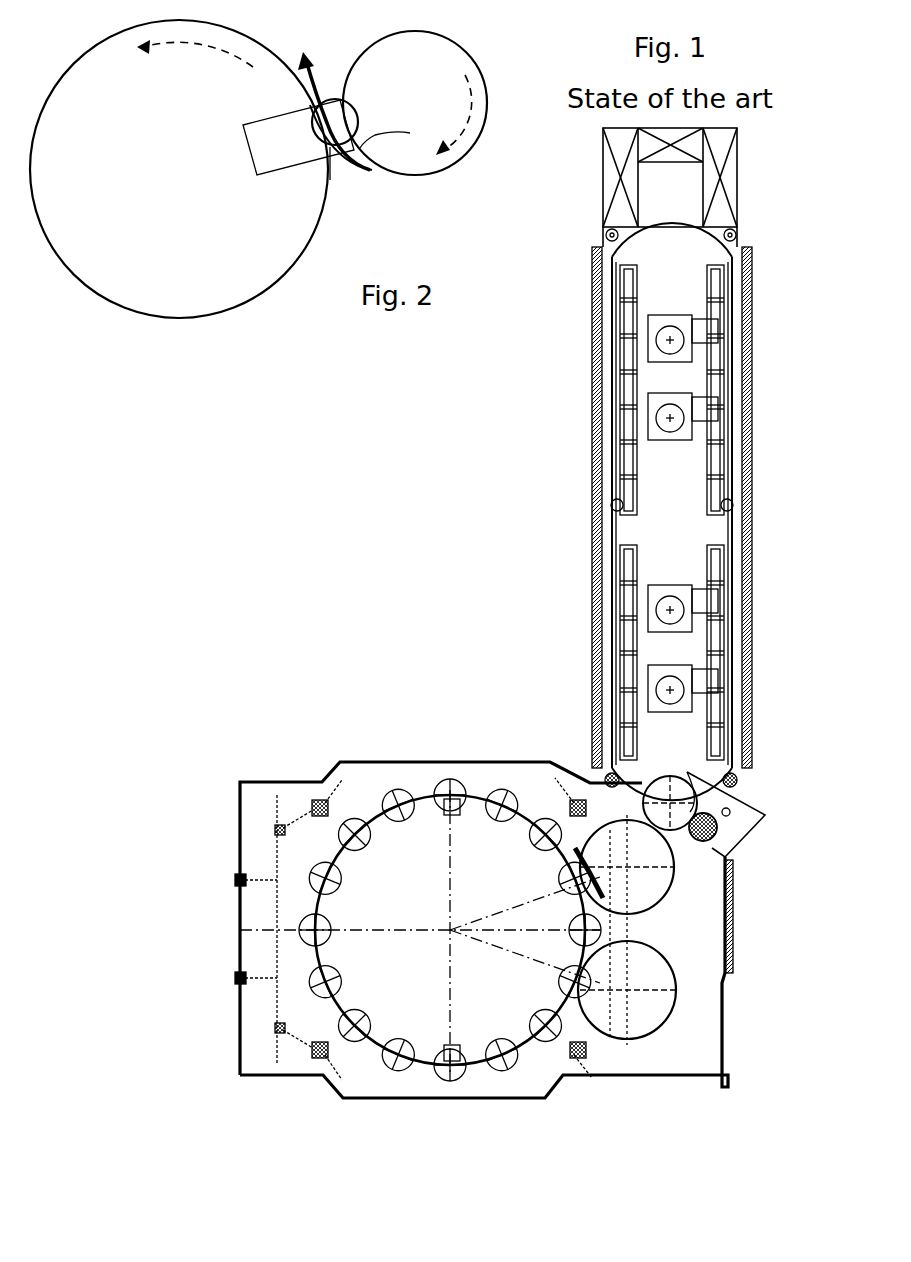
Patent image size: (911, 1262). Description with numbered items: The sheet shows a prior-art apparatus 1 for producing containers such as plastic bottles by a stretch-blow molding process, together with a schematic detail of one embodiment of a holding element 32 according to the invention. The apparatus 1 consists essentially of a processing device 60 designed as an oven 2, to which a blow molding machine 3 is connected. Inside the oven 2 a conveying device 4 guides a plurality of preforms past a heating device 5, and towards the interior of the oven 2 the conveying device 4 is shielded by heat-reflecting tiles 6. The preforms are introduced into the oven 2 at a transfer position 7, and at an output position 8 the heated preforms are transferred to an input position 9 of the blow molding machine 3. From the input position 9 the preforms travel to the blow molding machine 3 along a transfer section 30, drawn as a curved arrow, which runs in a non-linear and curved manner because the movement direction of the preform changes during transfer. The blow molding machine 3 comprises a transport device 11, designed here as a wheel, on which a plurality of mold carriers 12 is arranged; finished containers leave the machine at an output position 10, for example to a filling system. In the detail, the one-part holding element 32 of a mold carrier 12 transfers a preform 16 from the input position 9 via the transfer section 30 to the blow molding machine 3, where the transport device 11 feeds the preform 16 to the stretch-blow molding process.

In FIG. 2, the apparatus 1 is at (414, 550).
In FIG. 1, the oven 2 is at (753, 380).
In FIG. 2, the blow molding machine 3 is at (68, 67).
In FIG. 1, the conveying device 4 is at (725, 530).
In FIG. 1, the heating device 5 is at (600, 475).
In FIG. 1, the heat-reflecting tiles 6 is at (623, 317).
In FIG. 1, the transfer position 7 is at (758, 825).
In FIG. 1, the output position 8 is at (742, 793).
In FIG. 2, the input position 9 is at (752, 895).
In FIG. 2, the output position 10 is at (643, 1010).
In FIG. 2, the transport device 11 is at (337, 617).
In FIG. 2, the mold carriers 12 is at (352, 1025).
In FIG. 2, the preform 16 is at (410, 133).
In FIG. 2, the transfer section 30 is at (323, 72).
In FIG. 2, the holding element 32 is at (298, 140).
In FIG. 1, the processing device 60 is at (675, 521).